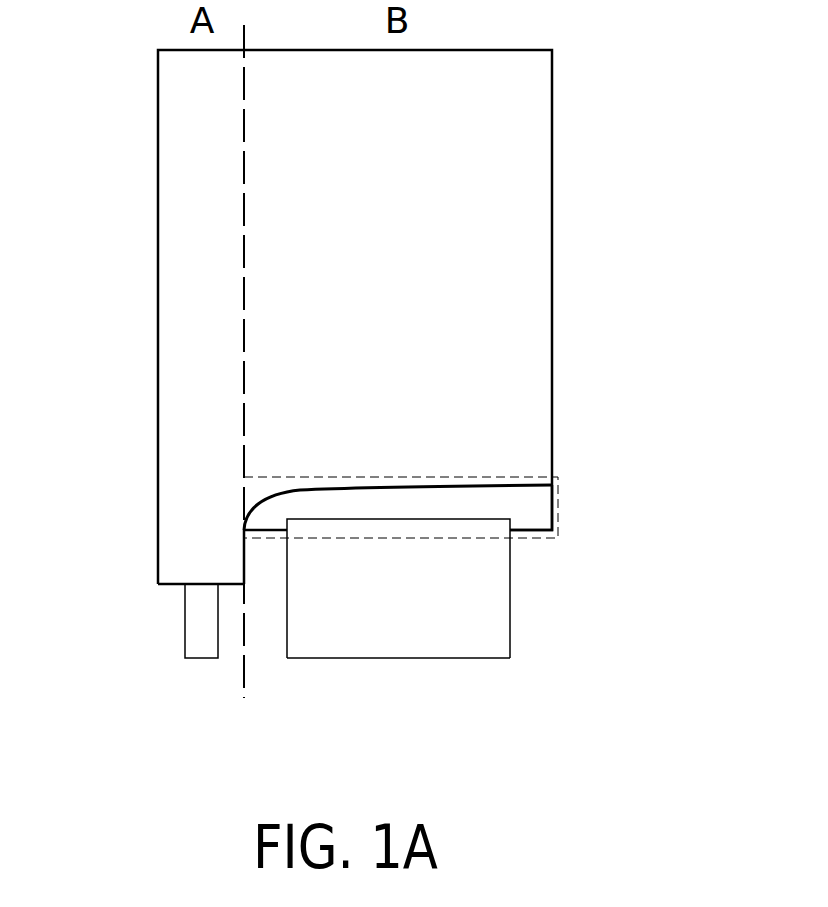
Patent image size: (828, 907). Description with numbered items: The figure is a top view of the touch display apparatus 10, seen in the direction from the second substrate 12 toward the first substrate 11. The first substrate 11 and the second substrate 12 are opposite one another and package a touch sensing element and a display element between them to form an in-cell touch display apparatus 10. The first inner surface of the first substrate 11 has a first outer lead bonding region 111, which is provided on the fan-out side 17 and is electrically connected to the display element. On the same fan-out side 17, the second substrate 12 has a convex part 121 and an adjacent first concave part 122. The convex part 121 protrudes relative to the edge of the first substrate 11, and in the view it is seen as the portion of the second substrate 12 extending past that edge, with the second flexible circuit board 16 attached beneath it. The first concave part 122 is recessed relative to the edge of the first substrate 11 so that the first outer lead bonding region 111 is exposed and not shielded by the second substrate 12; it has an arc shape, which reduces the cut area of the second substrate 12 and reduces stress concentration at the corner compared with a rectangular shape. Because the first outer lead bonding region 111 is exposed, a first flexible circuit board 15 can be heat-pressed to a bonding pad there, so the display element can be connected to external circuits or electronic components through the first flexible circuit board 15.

The touch display apparatus 10 is at (366, 398).
The first substrate 11 is at (532, 512).
The first outer lead bonding region 111 is at (557, 493).
The second substrate 12 is at (505, 185).
The convex part 121 is at (190, 551).
The first concave part 122 is at (270, 512).
The first flexible circuit board 15 is at (450, 635).
The second flexible circuit board 16 is at (202, 640).
The fan-out side 17 is at (558, 550).